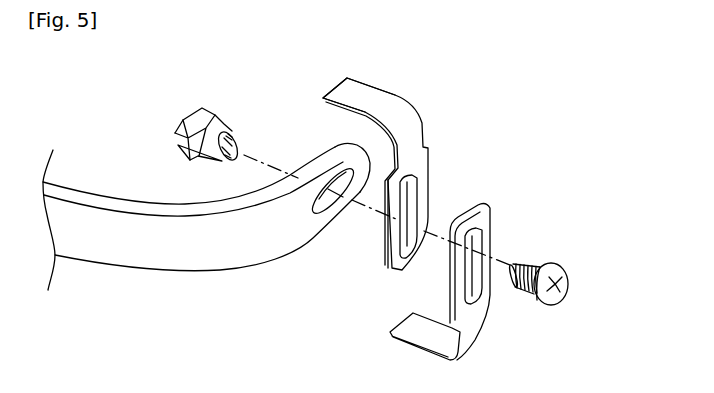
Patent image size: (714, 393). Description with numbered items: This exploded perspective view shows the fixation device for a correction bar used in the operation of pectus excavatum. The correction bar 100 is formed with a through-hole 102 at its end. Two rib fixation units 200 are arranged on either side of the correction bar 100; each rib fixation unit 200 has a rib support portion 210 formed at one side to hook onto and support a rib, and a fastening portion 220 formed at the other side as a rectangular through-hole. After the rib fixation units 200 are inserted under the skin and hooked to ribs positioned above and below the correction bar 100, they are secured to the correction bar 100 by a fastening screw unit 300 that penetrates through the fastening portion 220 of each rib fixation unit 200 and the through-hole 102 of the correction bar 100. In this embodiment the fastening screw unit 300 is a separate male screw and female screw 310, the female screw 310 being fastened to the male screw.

The correction bar 100 is at (170, 253).
The through-hole 102 is at (316, 208).
The rib fixation unit 200 is at (433, 101).
The rib support portion 210 is at (362, 98).
The fastening portion 220 is at (393, 270).
The fastening screw unit 300 is at (237, 112).
The female screw 310 is at (243, 141).